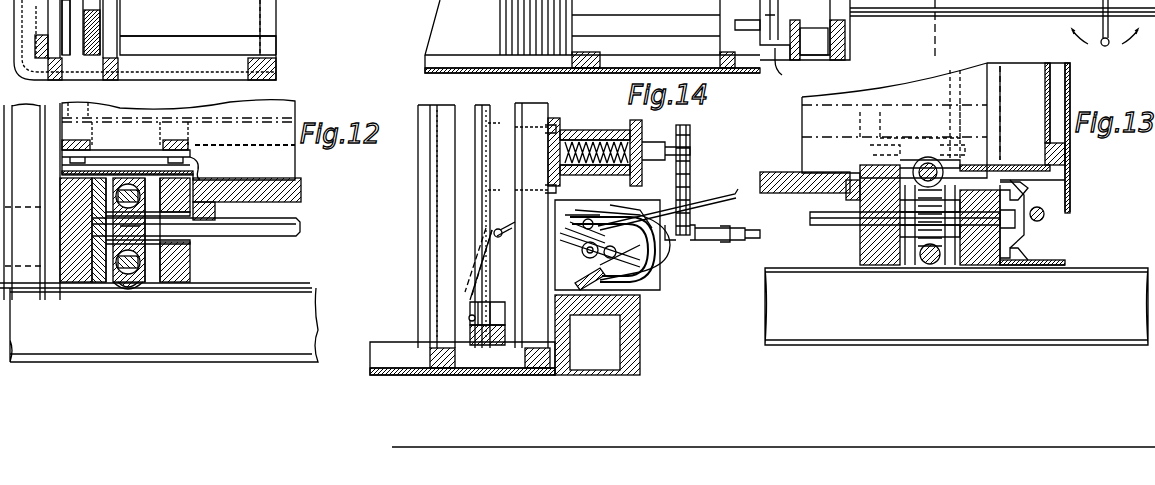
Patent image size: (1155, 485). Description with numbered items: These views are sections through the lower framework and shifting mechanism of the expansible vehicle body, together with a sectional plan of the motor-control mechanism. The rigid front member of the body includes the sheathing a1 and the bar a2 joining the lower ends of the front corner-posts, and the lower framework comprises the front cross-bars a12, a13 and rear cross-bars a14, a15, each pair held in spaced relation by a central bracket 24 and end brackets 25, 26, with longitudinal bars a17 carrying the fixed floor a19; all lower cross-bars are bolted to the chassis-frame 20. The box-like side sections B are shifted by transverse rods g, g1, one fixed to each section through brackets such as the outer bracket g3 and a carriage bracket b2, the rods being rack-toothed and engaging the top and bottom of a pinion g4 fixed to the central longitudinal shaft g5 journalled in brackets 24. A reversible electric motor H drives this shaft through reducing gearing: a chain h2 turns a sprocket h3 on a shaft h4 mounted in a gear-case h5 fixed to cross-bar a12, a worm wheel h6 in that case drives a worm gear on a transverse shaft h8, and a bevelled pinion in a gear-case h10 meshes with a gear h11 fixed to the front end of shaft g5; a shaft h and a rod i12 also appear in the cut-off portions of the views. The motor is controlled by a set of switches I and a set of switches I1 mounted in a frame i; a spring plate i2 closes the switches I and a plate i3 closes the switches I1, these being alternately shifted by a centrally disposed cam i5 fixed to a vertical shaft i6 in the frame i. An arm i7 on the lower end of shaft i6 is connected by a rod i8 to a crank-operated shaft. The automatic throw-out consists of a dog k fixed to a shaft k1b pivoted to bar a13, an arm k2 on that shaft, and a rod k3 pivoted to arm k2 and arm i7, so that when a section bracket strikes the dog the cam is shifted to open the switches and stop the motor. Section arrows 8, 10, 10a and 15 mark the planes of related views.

In FIG. 12, the section line 8 is at (118, 90).
In FIG. 14, the section line 10 is at (748, 82).
In FIG. 13, the section line 10a is at (1112, 73).
In FIG. 13, the section line 15 is at (928, 56).
In FIG. 12, the chassis-frame 20 is at (313, 298).
In FIG. 14, the chassis-frame 20 is at (462, 358).
In FIG. 13, the chassis-frame 20 is at (942, 335).
In FIG. 12, the central bracket 24 is at (123, 284).
In FIG. 13, the central bracket 24 is at (932, 265).
In FIG. 12, the bracket 25 is at (108, 208).
In FIG. 12, the bracket 26 is at (103, 33).
In FIG. 14, the bracket 26 is at (490, 358).
In FIG. 13, the bracket 26 is at (814, 41).
In FIG. 13, the sheathing a1 is at (1050, 92).
In FIG. 13, the bar a2 is at (1070, 152).
In FIG. 14, the front cross-bar a12 is at (548, 110).
In FIG. 13, the front cross-bar a12 is at (983, 268).
In FIG. 14, the front cross-bar a13 is at (435, 178).
In FIG. 13, the front cross-bar a13 is at (872, 268).
In FIG. 12, the rear cross-bar a14 is at (170, 282).
In FIG. 12, the rear cross-bar a15 is at (70, 282).
In FIG. 12, the longitudinal bar a17 is at (203, 40).
In FIG. 12, the fixed floor a19 is at (300, 196).
In FIG. 13, the fixed floor a19 is at (778, 172).
In FIG. 13, the side section B is at (903, 87).
In FIG. 12, the carriage bracket b2 is at (296, 103).
In FIG. 12, the transverse rod g is at (100, 192).
In FIG. 14, the transverse rod g is at (478, 108).
In FIG. 13, the transverse rod g is at (930, 160).
In FIG. 12, the transverse rod g1 is at (110, 260).
In FIG. 13, the transverse rod g1 is at (928, 268).
In FIG. 12, the outer bracket g3 is at (200, 152).
In FIG. 13, the outer bracket g3 is at (780, 72).
In FIG. 12, the pinion g4 is at (135, 286).
In FIG. 13, the pinion g4 is at (905, 228).
In FIG. 12, the central longitudinal shaft g5 is at (262, 238).
In FIG. 13, the central longitudinal shaft g5 is at (810, 214).
In FIG. 14, the shaft h is at (650, 5).
In FIG. 14, the chain h2 is at (690, 192).
In FIG. 14, the sprocket h3 is at (690, 128).
In FIG. 14, the shaft h4 is at (690, 150).
In FIG. 14, the gear-case h5 is at (596, 130).
In FIG. 14, the worm wheel h6 is at (600, 175).
In FIG. 13, the transverse shaft h8 is at (1044, 214).
In FIG. 13, the gear-case h10 is at (1070, 196).
In FIG. 13, the gear h11 is at (1030, 242).
In FIG. 14, the electric motor H is at (655, 275).
In FIG. 13, the electric motor H is at (835, 12).
In FIG. 14, the switches I is at (640, 290).
In FIG. 13, the switches I is at (830, 20).
In FIG. 14, the switches I1 is at (595, 170).
In FIG. 14, the frame i is at (597, 335).
In FIG. 14, the spring plate i2 is at (625, 300).
In FIG. 14, the spring plate i3 is at (608, 238).
In FIG. 14, the cam i5 is at (668, 285).
In FIG. 14, the vertical shaft i6 is at (582, 256).
In FIG. 14, the arm i7 is at (585, 228).
In FIG. 14, the rod i8 is at (724, 203).
In FIG. 13, the rod i12 is at (964, 10).
In FIG. 14, the dog k is at (470, 300).
In FIG. 14, the shaft k1b is at (470, 330).
In FIG. 14, the arm k2 is at (470, 255).
In FIG. 14, the rod k3 is at (512, 226).